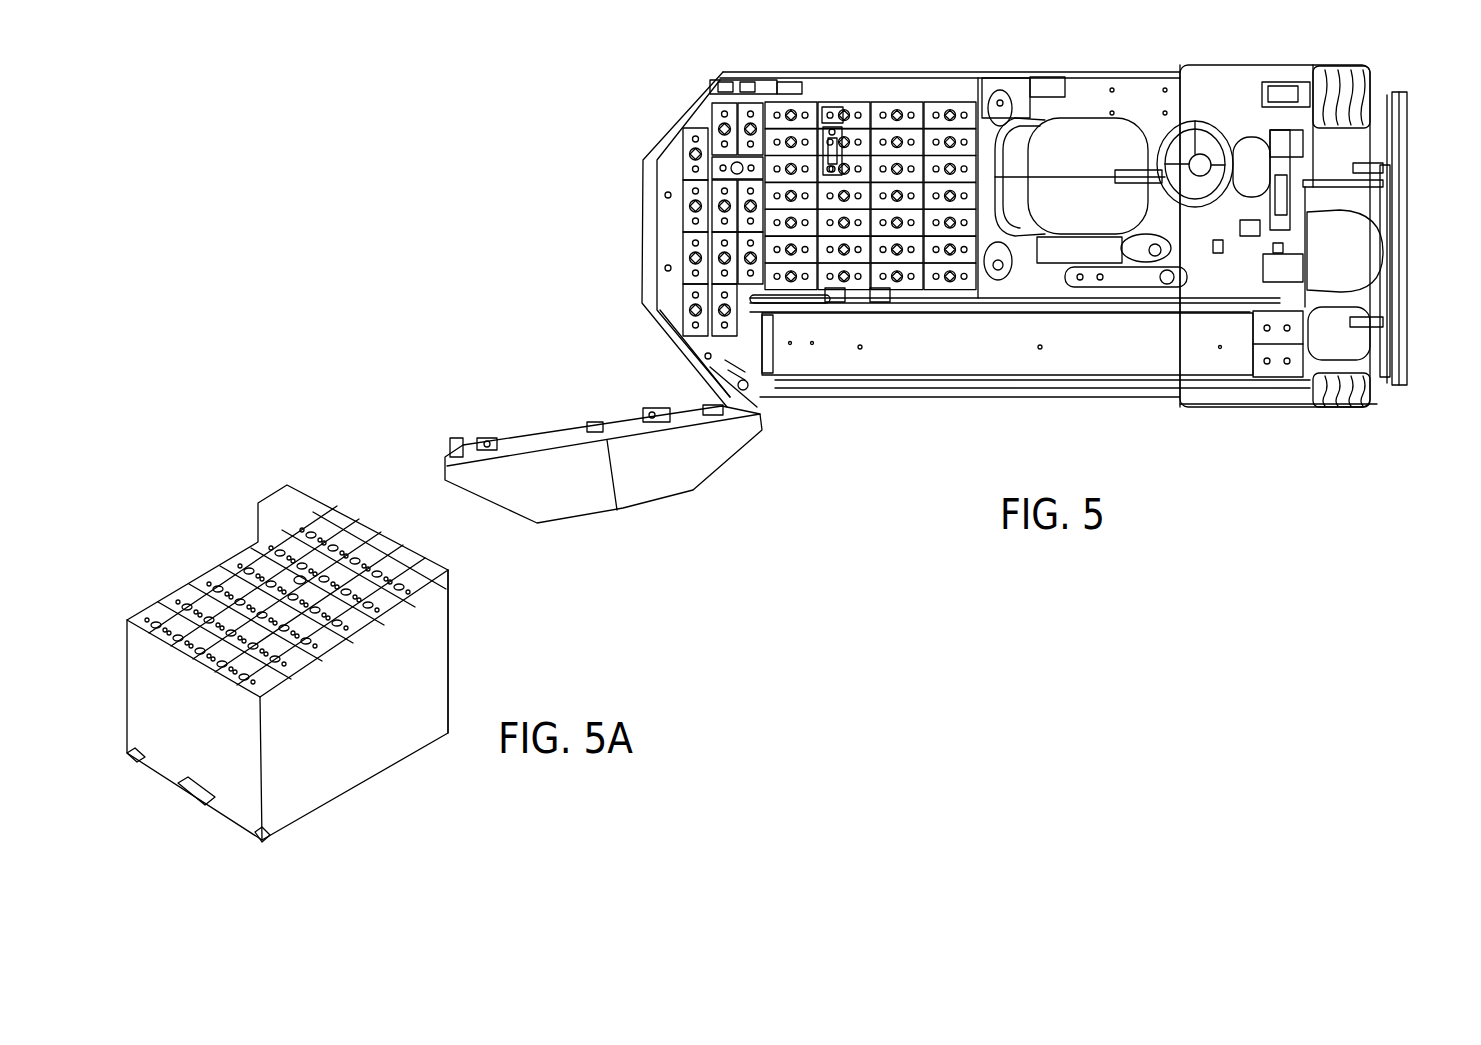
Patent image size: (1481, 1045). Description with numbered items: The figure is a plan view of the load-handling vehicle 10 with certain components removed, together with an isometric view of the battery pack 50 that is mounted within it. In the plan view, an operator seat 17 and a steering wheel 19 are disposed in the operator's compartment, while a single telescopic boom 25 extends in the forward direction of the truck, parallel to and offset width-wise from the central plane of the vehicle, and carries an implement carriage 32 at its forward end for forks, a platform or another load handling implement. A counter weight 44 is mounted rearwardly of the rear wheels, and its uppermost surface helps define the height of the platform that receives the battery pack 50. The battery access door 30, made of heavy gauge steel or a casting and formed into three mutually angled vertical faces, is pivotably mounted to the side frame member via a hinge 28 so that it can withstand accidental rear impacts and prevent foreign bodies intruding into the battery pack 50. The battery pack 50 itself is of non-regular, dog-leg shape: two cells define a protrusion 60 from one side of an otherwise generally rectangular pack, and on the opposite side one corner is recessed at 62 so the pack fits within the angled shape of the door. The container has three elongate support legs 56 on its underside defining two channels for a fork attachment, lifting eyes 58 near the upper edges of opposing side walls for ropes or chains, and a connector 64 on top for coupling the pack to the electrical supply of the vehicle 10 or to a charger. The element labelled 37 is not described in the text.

In FIG. 5, the load-handling vehicle 10 is at (1252, 447).
In FIG. 5, the operator seat 17 is at (1093, 115).
In FIG. 5, the steering wheel 19 is at (1203, 127).
In FIG. 5, the telescopic boom 25 is at (988, 370).
In FIG. 5, the hinge 28 is at (749, 388).
In FIG. 5, the battery access door 30 is at (640, 510).
In FIG. 5, the implement carriage 32 is at (1407, 135).
In FIG. 5, the battery module 37 is at (797, 85).
In FIG. 5, the counter weight 44 is at (642, 203).
In FIG. 5, the battery pack 50 is at (893, 100).
In FIG. 5A, the battery pack 50 is at (369, 812).
In FIG. 5A, the elongate support legs 56 is at (262, 838).
In FIG. 5A, the lifting eyes 58 is at (288, 532).
In FIG. 5, the protrusion 60 is at (683, 302).
In FIG. 5A, the protrusion 60 is at (303, 575).
In FIG. 5A, the recess 62 is at (449, 583).
In FIG. 5, the connector 64 is at (828, 113).